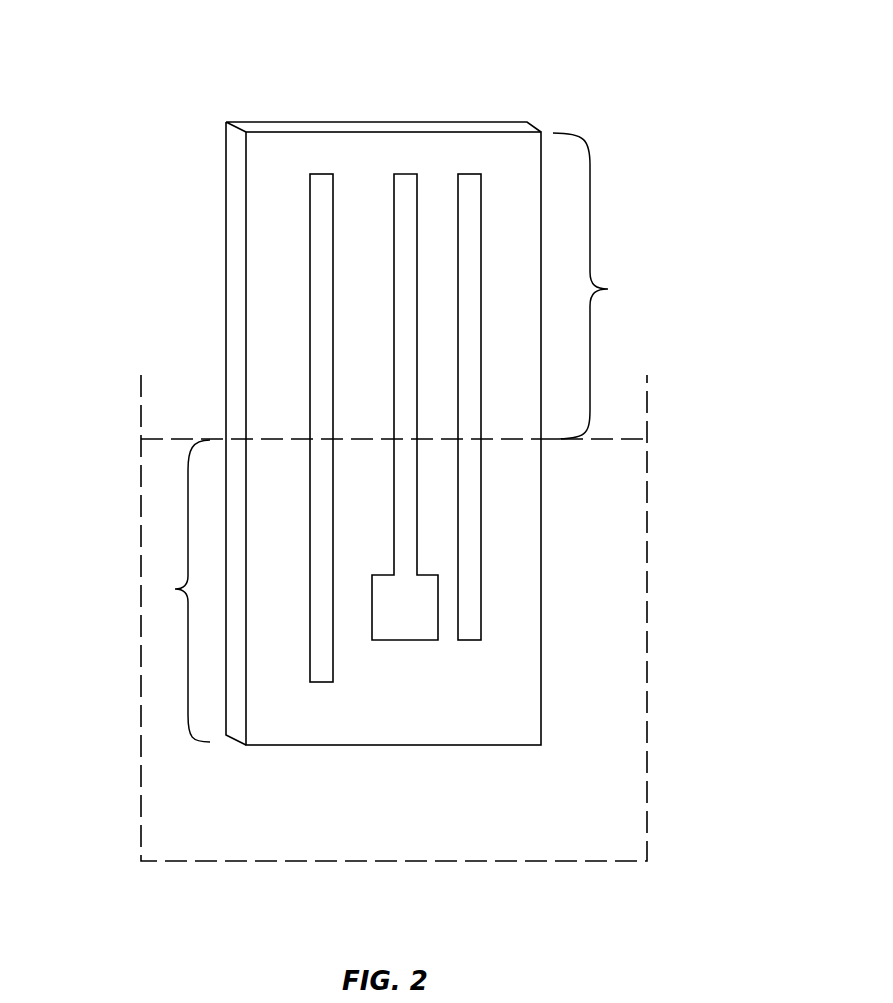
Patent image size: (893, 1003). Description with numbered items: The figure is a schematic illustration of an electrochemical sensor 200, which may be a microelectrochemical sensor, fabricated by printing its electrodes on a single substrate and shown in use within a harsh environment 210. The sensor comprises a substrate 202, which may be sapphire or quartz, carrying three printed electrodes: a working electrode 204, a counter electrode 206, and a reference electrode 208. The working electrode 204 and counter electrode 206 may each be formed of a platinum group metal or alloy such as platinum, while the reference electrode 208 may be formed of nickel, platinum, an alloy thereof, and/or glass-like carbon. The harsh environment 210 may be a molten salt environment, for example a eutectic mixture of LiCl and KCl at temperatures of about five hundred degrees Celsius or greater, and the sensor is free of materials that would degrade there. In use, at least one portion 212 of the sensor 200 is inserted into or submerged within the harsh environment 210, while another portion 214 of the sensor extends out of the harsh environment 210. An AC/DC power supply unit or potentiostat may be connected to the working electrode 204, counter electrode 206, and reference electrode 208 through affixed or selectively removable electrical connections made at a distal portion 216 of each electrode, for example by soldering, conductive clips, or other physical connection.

The electrochemical sensor 200 is at (515, 81).
The substrate 202 is at (266, 168).
The working electrode 204 is at (472, 372).
The counter electrode 206 is at (406, 322).
The reference electrode 208 is at (322, 260).
The harsh environment 210 is at (651, 472).
The portion 212 is at (175, 589).
The another portion 214 is at (603, 286).
The distal portion 216 is at (498, 175).